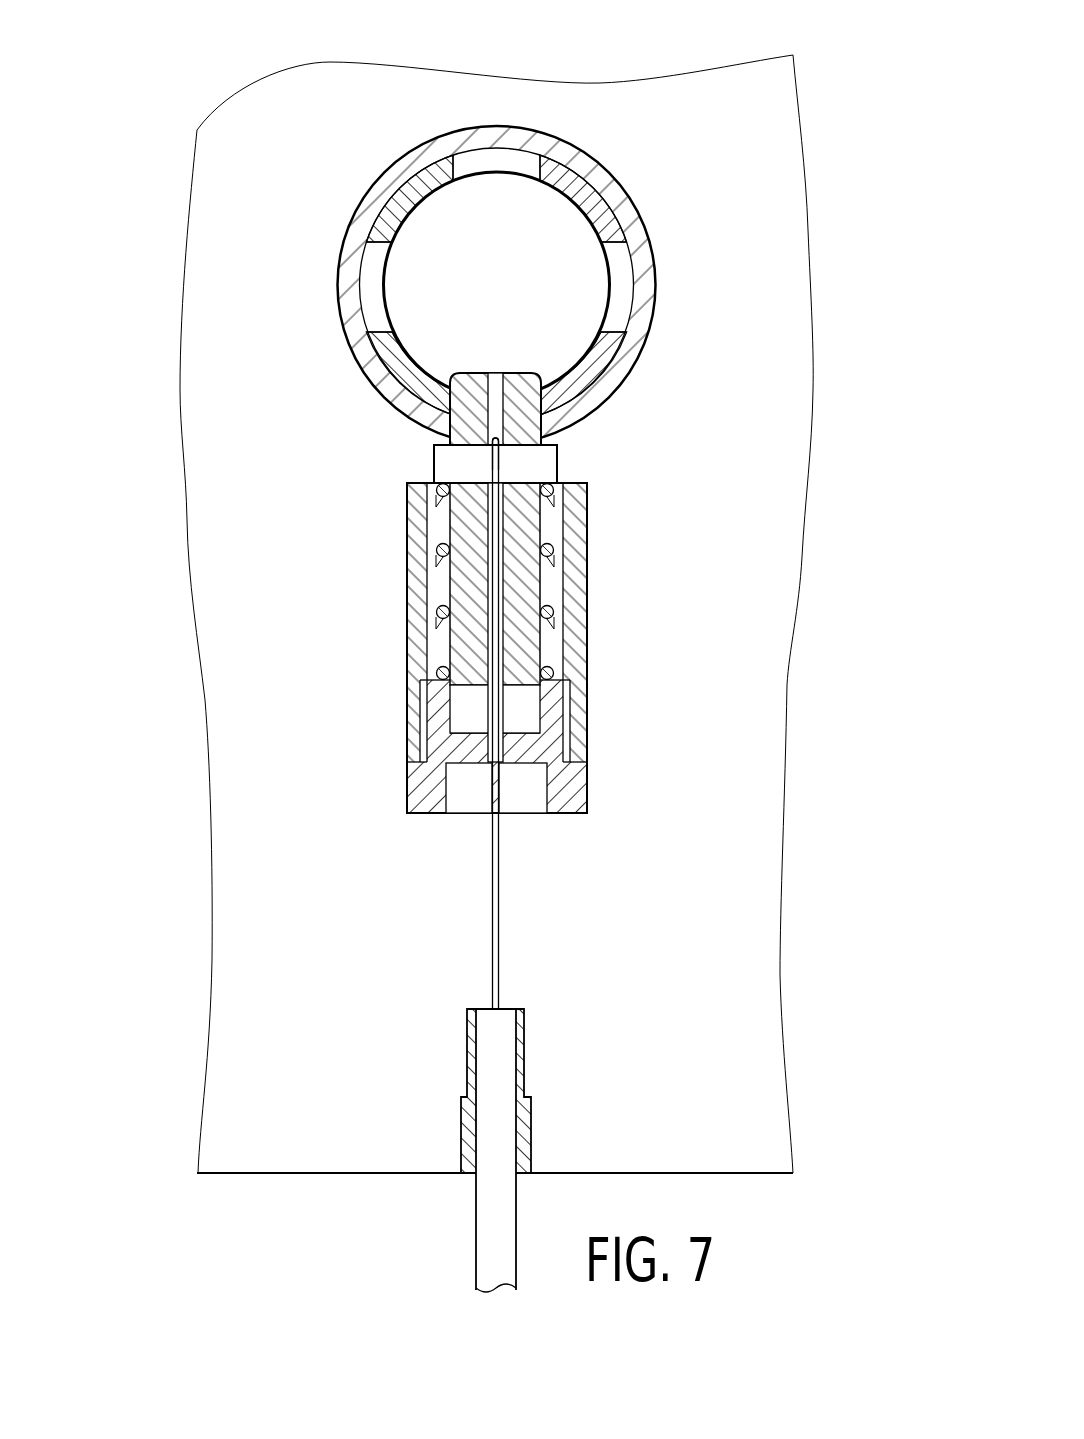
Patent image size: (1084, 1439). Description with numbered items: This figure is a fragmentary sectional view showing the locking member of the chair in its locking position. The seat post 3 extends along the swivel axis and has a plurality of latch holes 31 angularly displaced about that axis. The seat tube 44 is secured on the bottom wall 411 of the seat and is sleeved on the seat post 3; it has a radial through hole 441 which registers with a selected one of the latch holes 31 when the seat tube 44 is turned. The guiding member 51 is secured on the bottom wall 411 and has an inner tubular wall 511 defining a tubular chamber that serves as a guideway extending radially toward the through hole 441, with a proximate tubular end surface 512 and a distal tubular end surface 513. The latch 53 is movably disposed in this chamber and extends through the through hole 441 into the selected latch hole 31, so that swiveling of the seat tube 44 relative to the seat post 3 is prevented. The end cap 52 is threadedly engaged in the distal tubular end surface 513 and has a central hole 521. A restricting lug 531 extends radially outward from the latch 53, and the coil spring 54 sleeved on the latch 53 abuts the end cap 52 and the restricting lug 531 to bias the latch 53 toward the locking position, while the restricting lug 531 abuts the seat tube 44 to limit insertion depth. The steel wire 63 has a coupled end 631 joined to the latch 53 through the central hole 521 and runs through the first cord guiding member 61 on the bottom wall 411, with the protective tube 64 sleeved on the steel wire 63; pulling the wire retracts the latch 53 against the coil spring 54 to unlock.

The seat post 3 is at (357, 205).
The latch holes 31 is at (478, 160).
The seat tube 44 is at (613, 173).
The through hole 441 is at (541, 432).
The restricting lug 531 is at (547, 468).
The guiding member 51 is at (407, 658).
The inner tubular wall 511 is at (565, 650).
The proximate tubular end surface 512 is at (568, 500).
The distal tubular end surface 513 is at (548, 709).
The end cap 52 is at (582, 787).
The central hole 521 is at (500, 748).
The latch 53 is at (543, 590).
The coil spring 54 is at (443, 553).
The steel wire 63 is at (491, 895).
The coupled end 631 is at (490, 603).
The protective tube 64 is at (503, 1053).
The first cord guiding member 61 is at (530, 1120).
The bottom wall 411 is at (300, 1033).